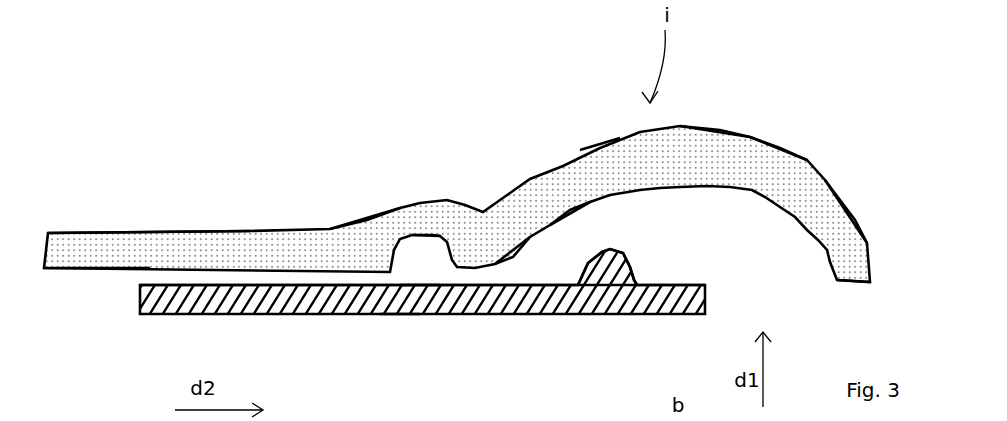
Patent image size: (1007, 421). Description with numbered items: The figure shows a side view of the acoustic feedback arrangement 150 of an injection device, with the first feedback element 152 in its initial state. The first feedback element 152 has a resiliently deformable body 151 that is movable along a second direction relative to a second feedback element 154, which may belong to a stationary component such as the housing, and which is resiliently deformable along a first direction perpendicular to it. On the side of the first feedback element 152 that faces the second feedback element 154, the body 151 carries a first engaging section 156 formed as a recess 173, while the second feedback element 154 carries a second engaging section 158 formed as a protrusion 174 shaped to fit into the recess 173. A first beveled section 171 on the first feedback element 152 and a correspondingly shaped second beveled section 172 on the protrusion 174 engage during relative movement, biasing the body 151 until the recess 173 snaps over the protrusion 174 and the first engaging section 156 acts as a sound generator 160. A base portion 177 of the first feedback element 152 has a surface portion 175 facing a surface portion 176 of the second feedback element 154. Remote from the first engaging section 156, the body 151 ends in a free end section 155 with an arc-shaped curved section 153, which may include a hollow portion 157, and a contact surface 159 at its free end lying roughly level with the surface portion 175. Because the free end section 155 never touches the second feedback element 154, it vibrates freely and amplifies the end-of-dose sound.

The acoustic feedback arrangement 150 is at (488, 130).
The resiliently deformable body 151 is at (370, 235).
The first feedback element 152 is at (221, 237).
The curved section 153 is at (720, 140).
The second feedback element 154 is at (340, 314).
The free end section 155 is at (765, 150).
The first engaging section 156 is at (396, 314).
The hollow portion 157 is at (840, 237).
The second engaging section 158 is at (612, 249).
The contact surface 159 is at (845, 282).
The sound generator 160 is at (428, 225).
The first beveled section 171 is at (513, 257).
The second beveled section 172 is at (583, 262).
The recess 173 is at (423, 262).
The protrusion 174 is at (605, 265).
The surface portion 175 is at (115, 270).
The surface portion 176 is at (288, 290).
The base portion 177 is at (113, 243).